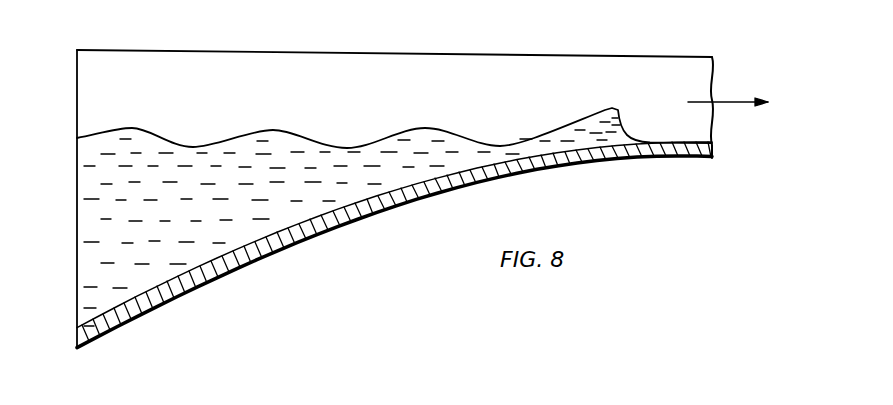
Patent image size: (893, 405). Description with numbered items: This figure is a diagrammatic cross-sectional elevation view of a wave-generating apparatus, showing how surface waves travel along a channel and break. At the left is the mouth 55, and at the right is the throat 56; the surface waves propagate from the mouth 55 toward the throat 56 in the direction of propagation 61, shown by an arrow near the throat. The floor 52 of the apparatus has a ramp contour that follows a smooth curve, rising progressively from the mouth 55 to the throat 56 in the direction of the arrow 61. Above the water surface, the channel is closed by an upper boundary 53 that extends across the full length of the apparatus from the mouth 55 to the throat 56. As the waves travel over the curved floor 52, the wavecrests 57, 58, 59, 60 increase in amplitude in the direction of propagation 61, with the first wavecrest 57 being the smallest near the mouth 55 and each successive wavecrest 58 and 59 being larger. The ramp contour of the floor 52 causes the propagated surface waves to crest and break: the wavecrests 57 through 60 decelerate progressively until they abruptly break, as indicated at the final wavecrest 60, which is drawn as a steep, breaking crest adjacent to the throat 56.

The floor 52 is at (316, 236).
The top wall 53 is at (345, 62).
The mouth 55 is at (77, 211).
The throat 56 is at (707, 72).
The wavecrest 57 is at (130, 135).
The wavecrest 58 is at (272, 138).
The wavecrest 59 is at (425, 135).
The wavecrest 60 is at (610, 108).
The direction of propagation 61 is at (733, 104).